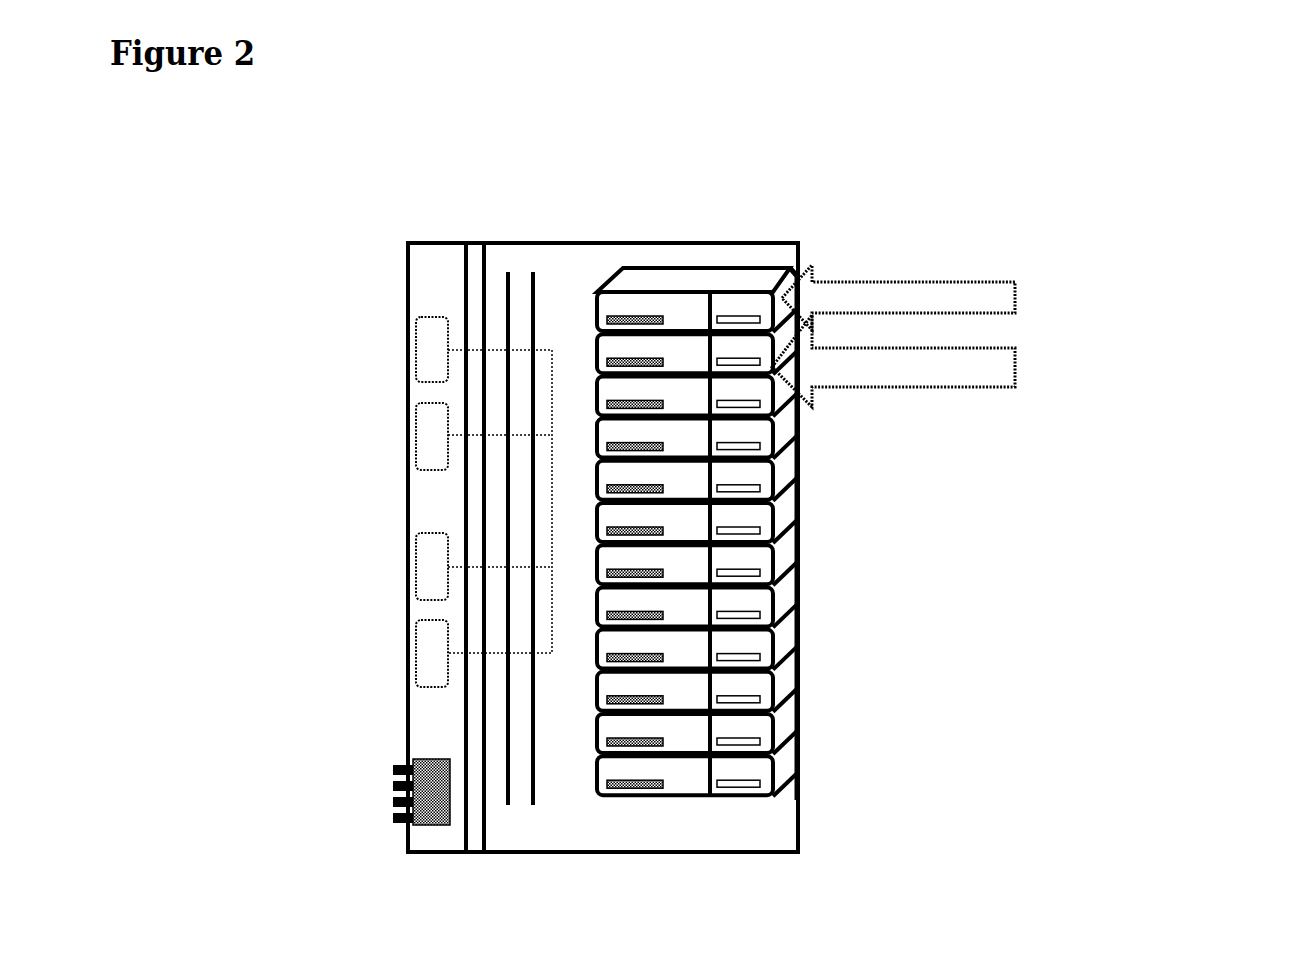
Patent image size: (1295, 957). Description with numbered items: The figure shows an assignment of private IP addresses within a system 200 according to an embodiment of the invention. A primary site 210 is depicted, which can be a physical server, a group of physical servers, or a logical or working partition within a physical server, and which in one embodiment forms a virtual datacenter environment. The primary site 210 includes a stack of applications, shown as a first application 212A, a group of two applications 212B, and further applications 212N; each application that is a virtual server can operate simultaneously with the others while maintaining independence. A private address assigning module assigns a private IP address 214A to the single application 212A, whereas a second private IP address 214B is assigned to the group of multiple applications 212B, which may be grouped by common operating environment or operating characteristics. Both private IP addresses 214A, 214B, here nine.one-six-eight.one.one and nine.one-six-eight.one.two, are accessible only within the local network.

The network system 200 is at (1203, 98).
The primary site 210 is at (402, 258).
The application 212A is at (738, 280).
The group of multiple applications 212B is at (685, 352).
The applications 212N is at (805, 846).
The private IP address 214A is at (948, 282).
The private IP address 214B is at (1011, 348).